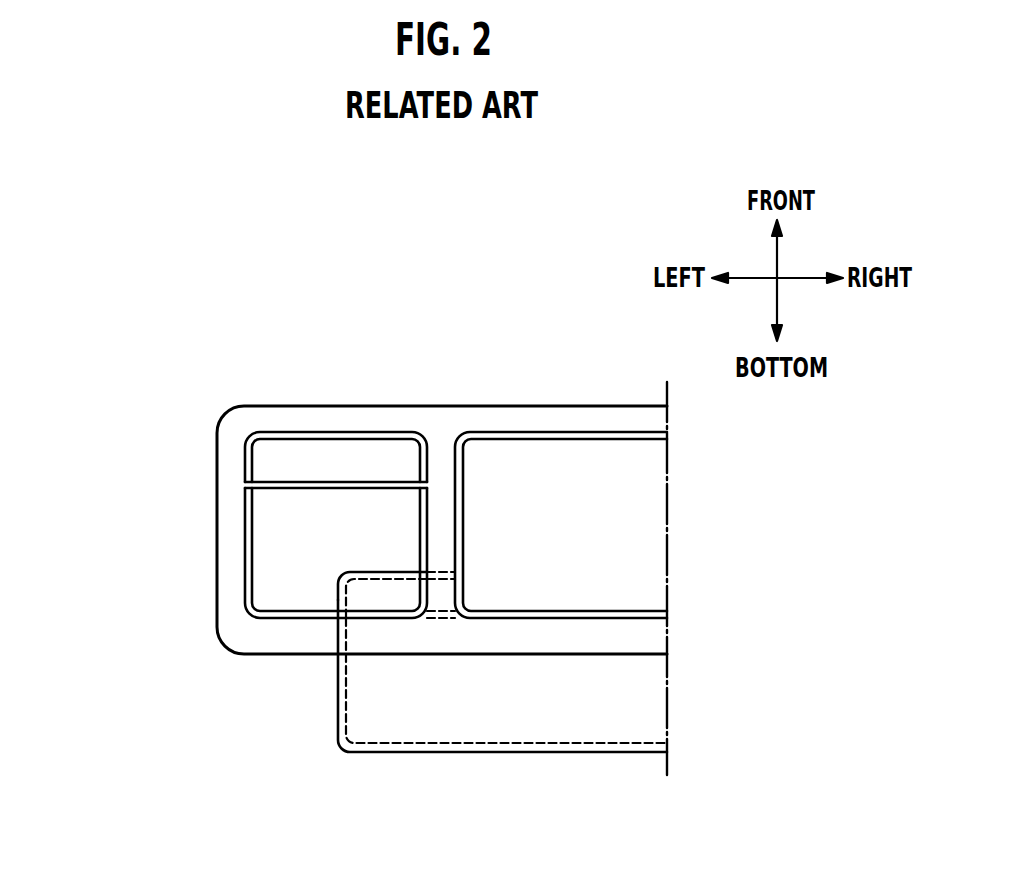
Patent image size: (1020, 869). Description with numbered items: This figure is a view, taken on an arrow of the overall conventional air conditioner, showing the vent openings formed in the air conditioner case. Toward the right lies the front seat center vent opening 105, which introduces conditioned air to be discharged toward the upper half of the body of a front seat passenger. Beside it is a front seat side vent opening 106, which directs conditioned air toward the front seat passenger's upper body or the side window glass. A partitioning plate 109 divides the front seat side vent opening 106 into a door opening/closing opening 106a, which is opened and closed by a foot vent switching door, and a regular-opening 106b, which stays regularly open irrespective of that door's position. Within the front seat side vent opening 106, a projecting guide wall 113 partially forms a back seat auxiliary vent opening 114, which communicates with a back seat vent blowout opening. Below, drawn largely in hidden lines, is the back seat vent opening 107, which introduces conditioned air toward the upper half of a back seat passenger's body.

The front seat center vent opening 105 is at (650, 560).
The front seat side vent opening 106 is at (227, 473).
The door opening/closing opening 106a is at (283, 561).
The regular-opening 106b is at (283, 457).
The partitioning plate 109 is at (330, 482).
The projecting guide wall 113 is at (383, 572).
The back seat auxiliary vent opening 114 is at (385, 598).
The back seat vent opening 107 is at (502, 663).